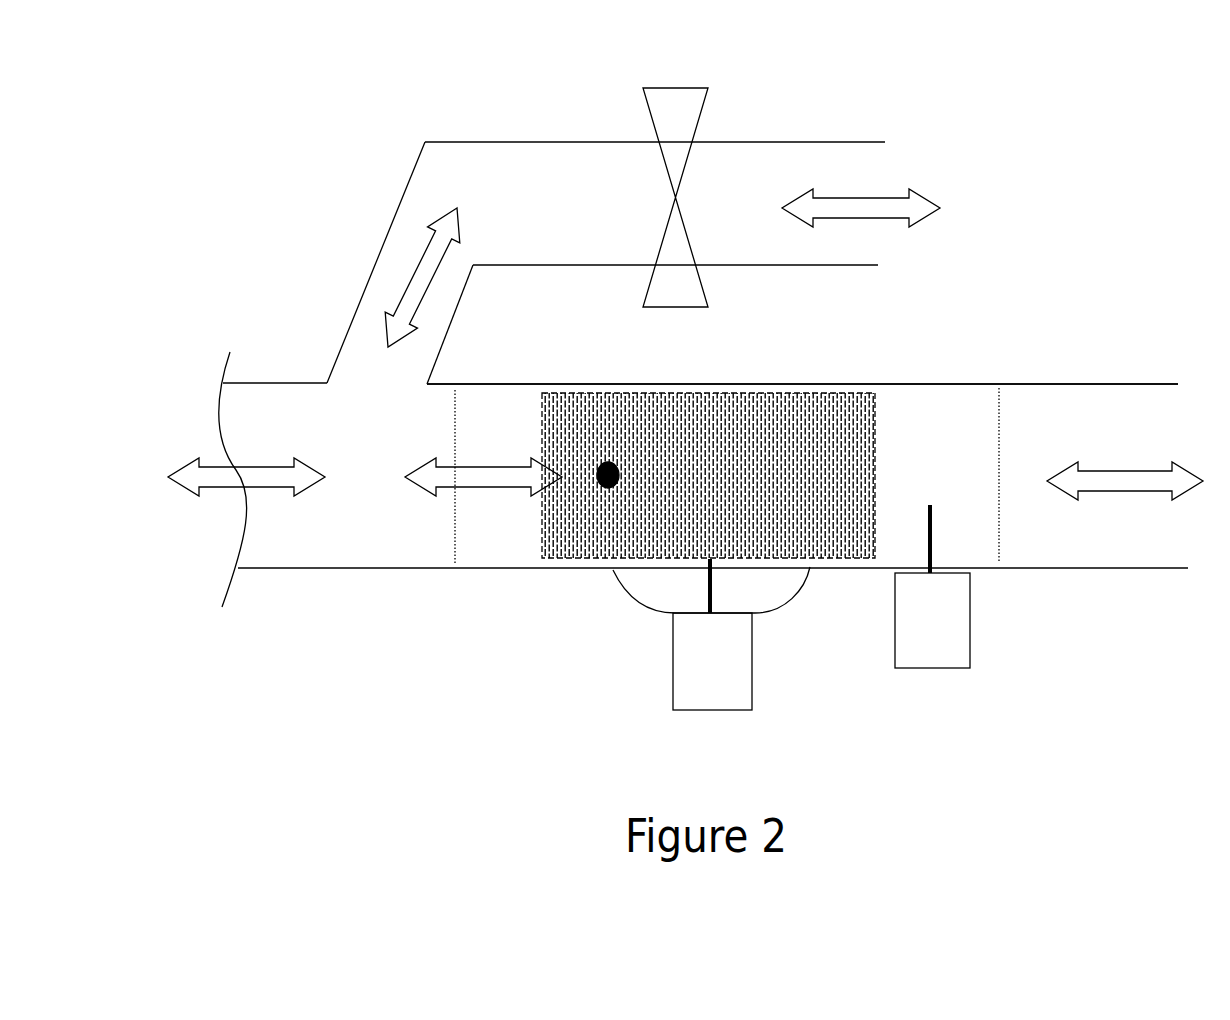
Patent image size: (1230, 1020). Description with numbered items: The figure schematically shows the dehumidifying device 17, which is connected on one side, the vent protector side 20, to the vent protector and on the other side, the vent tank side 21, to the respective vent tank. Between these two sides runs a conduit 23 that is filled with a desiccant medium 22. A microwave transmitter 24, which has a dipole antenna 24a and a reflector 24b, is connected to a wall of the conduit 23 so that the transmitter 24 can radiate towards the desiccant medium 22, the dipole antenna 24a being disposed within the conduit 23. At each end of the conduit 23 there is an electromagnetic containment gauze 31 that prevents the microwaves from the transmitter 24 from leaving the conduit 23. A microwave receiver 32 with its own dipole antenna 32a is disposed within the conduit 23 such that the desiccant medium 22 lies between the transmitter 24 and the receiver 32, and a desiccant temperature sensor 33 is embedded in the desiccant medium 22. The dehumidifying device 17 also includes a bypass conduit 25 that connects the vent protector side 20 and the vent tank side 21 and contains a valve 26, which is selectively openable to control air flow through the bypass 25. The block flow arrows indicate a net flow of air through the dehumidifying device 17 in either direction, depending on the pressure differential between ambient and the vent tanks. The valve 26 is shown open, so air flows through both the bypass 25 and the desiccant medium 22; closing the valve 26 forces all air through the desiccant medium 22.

The dehumidifying device 17 is at (440, 707).
The vent protector side 20 is at (323, 568).
The vent tank side 21 is at (847, 145).
The desiccant medium 22 is at (675, 498).
The conduit 23 is at (1058, 385).
The microwave transmitter 24 is at (712, 661).
The dipole antenna 24a is at (712, 575).
The reflector 24b is at (783, 610).
The bypass conduit 25 is at (543, 170).
The valve 26 is at (677, 117).
The electromagnetic containment gauze 31 is at (448, 530).
The microwave receiver 32 is at (932, 620).
The dipole antenna 32a is at (933, 530).
The desiccant temperature sensor 33 is at (595, 500).